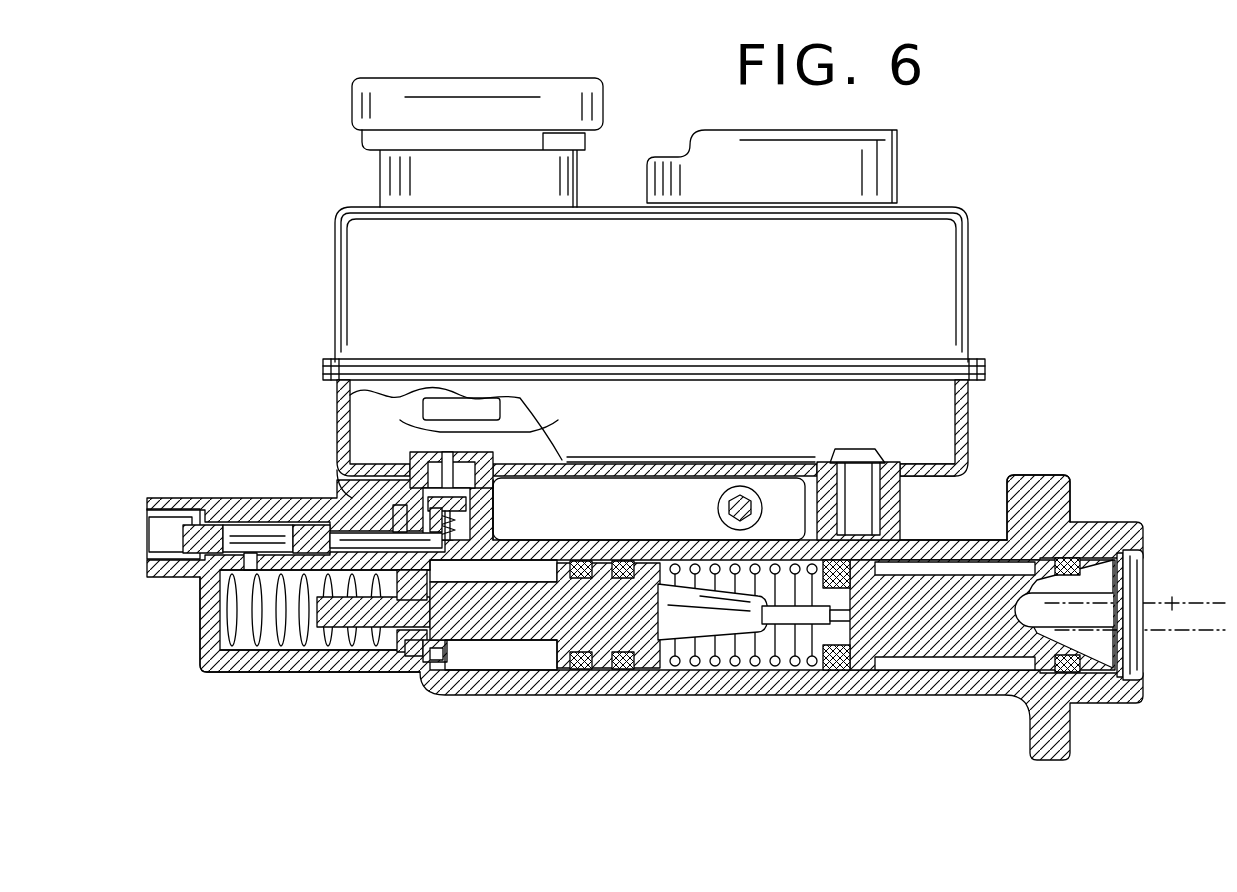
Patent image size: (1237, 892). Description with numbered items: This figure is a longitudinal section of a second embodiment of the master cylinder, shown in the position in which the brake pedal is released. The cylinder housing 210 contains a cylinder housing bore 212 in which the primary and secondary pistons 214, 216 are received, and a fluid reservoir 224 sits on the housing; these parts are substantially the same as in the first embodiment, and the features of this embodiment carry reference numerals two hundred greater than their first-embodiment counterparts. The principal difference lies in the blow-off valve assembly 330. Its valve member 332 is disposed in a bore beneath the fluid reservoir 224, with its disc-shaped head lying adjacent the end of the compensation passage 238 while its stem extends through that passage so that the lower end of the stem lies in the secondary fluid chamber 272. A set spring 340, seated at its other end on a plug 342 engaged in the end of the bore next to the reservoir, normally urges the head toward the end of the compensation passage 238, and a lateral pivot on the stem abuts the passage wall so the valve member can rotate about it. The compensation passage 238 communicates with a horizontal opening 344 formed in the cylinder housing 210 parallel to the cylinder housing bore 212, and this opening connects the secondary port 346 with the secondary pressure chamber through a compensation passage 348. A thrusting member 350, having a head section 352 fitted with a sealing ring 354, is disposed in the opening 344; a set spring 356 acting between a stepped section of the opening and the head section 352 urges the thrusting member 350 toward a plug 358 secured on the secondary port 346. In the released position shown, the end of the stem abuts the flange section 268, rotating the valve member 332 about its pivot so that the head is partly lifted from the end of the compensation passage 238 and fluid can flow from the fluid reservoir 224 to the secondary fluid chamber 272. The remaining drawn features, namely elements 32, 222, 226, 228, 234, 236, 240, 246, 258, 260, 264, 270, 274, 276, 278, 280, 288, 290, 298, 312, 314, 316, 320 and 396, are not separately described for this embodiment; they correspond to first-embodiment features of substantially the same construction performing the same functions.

The compensation chamber 32 is at (490, 495).
The cylinder housing 210 is at (940, 510).
The cylinder housing bore 212 is at (758, 668).
The primary piston 214 is at (940, 662).
The secondary piston 216 is at (523, 620).
The spring chamber 222 is at (225, 625).
The fluid reservoir 224 is at (622, 308).
The reservoir wall 226 is at (958, 470).
The valve boss 228 is at (420, 495).
The housing bore wall 234 is at (887, 553).
The mounting boss 236 is at (813, 473).
The compensation passage 238 is at (460, 568).
The retainer ring 240 is at (385, 592).
The fastener bolt 246 is at (887, 462).
The housing flange 258 is at (982, 567).
The secondary clearance 260 is at (897, 667).
The end cap 264 is at (1090, 662).
The flange section 268 is at (425, 662).
The piston seal 270 is at (597, 572).
The secondary fluid chamber 272 is at (478, 665).
The stop plate 274 is at (1125, 556).
The end seal 276 is at (1070, 560).
The push rod socket 278 is at (1068, 630).
The push rod 280 is at (1172, 603).
The secondary piston seal 288 is at (828, 658).
The piston spring 290 is at (697, 658).
The adjusting screw 298 is at (872, 625).
The piston stem 312 is at (335, 627).
The seal washer 314 is at (440, 662).
The lip seal 316 is at (405, 655).
The housing end portion 320 is at (220, 637).
The blow-off valve assembly 330 is at (507, 410).
The valve member 332 is at (488, 522).
The set spring 340 is at (450, 462).
The plug 342 is at (423, 452).
The horizontal opening 344 is at (260, 528).
The secondary port 346 is at (148, 540).
The compensation passage 348 is at (215, 605).
The thrusting member 350 is at (343, 482).
The head section 352 is at (318, 527).
The sealing ring 354 is at (310, 525).
The set spring 356 is at (333, 563).
The plug 358 is at (212, 506).
The spring retainer cone 396 is at (668, 640).